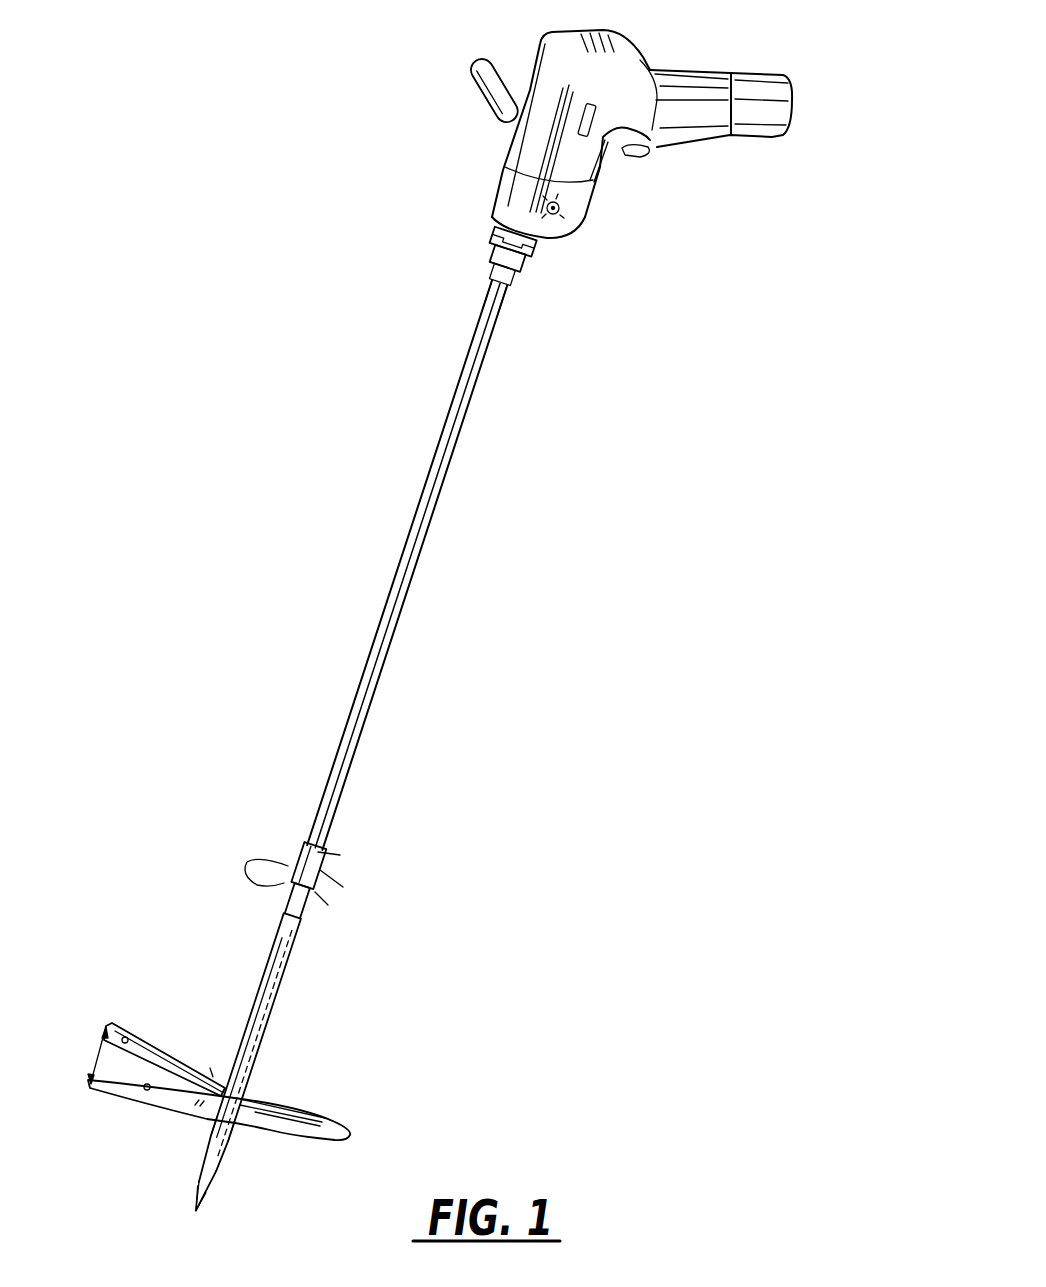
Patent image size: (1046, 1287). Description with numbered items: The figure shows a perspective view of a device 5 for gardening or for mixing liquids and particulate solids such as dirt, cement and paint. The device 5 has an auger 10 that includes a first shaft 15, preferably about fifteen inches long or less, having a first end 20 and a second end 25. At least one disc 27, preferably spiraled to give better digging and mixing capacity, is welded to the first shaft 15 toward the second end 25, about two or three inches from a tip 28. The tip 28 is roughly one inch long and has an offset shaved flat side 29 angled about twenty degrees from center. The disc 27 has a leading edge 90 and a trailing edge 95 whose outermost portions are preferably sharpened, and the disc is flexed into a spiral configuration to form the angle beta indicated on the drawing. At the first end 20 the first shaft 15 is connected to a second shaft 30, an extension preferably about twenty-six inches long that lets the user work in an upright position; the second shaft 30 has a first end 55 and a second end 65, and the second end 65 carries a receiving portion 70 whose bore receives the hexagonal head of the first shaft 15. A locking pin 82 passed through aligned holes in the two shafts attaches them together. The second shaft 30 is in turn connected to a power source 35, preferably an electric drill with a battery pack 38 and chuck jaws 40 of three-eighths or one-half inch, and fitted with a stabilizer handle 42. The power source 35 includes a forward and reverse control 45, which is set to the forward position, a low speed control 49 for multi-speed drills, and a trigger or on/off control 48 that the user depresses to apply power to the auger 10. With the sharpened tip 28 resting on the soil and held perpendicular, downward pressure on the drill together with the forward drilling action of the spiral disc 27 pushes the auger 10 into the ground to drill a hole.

The device 5 is at (850, 197).
The auger 10 is at (250, 1052).
The first shaft 15 is at (282, 976).
The first end 20 is at (290, 925).
The second end 25 is at (213, 1137).
The disc 27 is at (327, 1117).
The tip 28 is at (205, 1185).
The offset shaved flat side 29 is at (192, 1198).
The second shaft 30 is at (442, 414).
The power source 35 is at (500, 173).
The battery pack 38 is at (770, 85).
The chuck jaws 40 is at (518, 282).
The stabilizer handle 42 is at (468, 66).
The forward and reverse control 45 is at (587, 133).
The on/off control 48 is at (633, 157).
The low speed control 49 is at (562, 213).
The first end 55 is at (500, 290).
The second end 65 is at (298, 847).
The receiving portion 70 is at (317, 853).
The locking pin 82 is at (247, 860).
The leading edge 90 is at (147, 1088).
The trailing edge 95 is at (127, 1037).